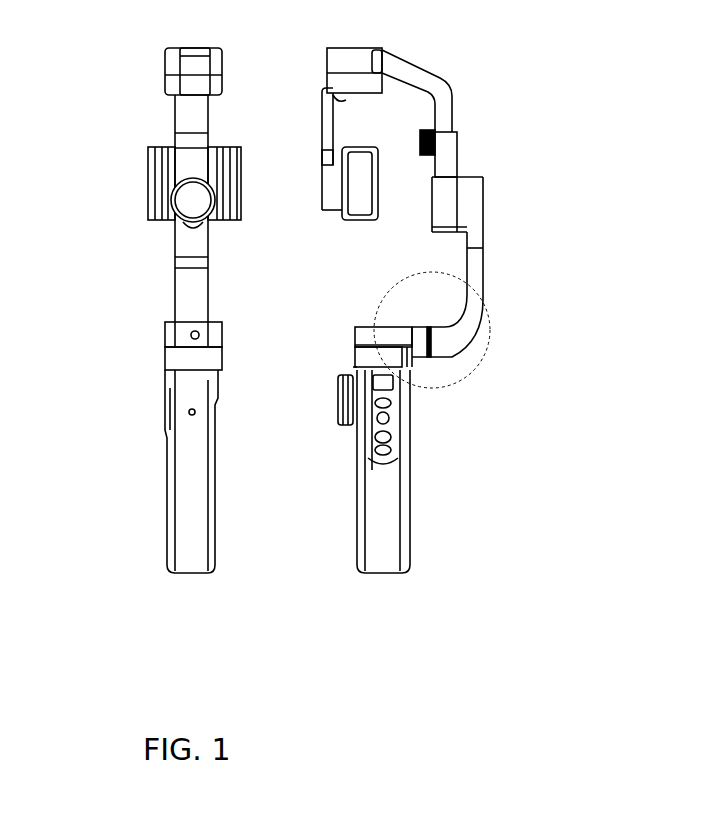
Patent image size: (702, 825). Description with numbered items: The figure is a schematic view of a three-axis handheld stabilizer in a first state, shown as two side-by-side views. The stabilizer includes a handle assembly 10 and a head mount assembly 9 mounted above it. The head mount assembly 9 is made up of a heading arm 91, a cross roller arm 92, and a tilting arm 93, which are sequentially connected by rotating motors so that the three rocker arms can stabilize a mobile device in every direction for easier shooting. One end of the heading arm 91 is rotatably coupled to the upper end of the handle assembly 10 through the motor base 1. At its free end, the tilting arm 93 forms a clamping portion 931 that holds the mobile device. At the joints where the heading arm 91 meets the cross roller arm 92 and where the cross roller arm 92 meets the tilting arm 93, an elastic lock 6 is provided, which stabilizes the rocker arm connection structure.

The motor base 1 is at (385, 335).
The elastic lock 6 is at (178, 185).
The head mount assembly 9 is at (188, 282).
The handle assembly 10 is at (195, 517).
The heading arm 91 is at (475, 281).
The cross roller arm 92 is at (445, 92).
The tilting arm 93 is at (327, 125).
The clamping portion 931 is at (358, 187).